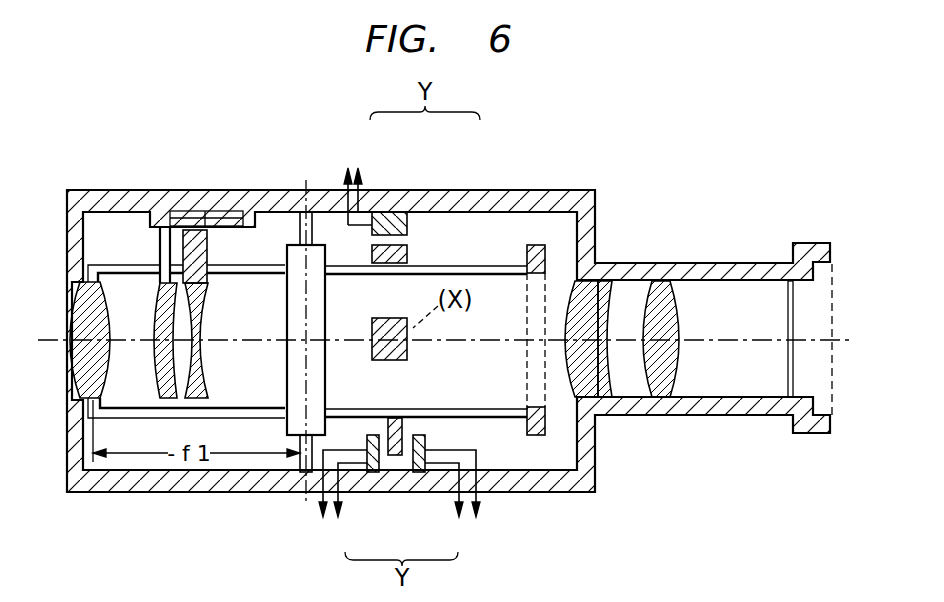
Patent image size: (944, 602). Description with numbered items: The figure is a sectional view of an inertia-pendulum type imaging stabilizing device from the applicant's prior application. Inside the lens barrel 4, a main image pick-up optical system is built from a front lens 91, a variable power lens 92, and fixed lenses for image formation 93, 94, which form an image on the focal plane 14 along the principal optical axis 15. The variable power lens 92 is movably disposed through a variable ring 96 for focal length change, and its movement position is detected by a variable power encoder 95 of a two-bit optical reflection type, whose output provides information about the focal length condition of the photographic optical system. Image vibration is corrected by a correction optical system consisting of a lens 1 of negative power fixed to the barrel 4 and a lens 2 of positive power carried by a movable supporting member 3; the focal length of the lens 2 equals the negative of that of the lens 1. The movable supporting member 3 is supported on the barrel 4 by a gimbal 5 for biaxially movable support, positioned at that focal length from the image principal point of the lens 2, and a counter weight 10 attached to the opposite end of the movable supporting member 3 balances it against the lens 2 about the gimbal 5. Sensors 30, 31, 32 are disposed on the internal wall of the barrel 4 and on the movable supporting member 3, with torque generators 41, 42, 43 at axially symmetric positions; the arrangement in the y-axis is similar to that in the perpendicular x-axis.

The lens 1 is at (427, 308).
The lens 2 is at (108, 318).
The movable supporting member 3 is at (114, 273).
The lens barrel 4 is at (103, 191).
The gimbal 5 is at (286, 294).
The counter weight 10 is at (527, 250).
The focal plane 14 is at (788, 306).
The principal optical axis 15 is at (840, 337).
The sensor 30 is at (372, 465).
The sensor 31 is at (396, 456).
The sensor 32 is at (420, 475).
The torque generator 41 is at (428, 245).
The torque generator 42 is at (392, 212).
The torque generator 43 is at (352, 196).
The front lens 91 is at (160, 366).
The variable power lens 92 is at (209, 378).
The fixed lens for image formation 93 is at (567, 372).
The fixed lens for image formation 94 is at (678, 368).
The variable power encoder 95 is at (194, 211).
The variable ring 96 is at (209, 245).